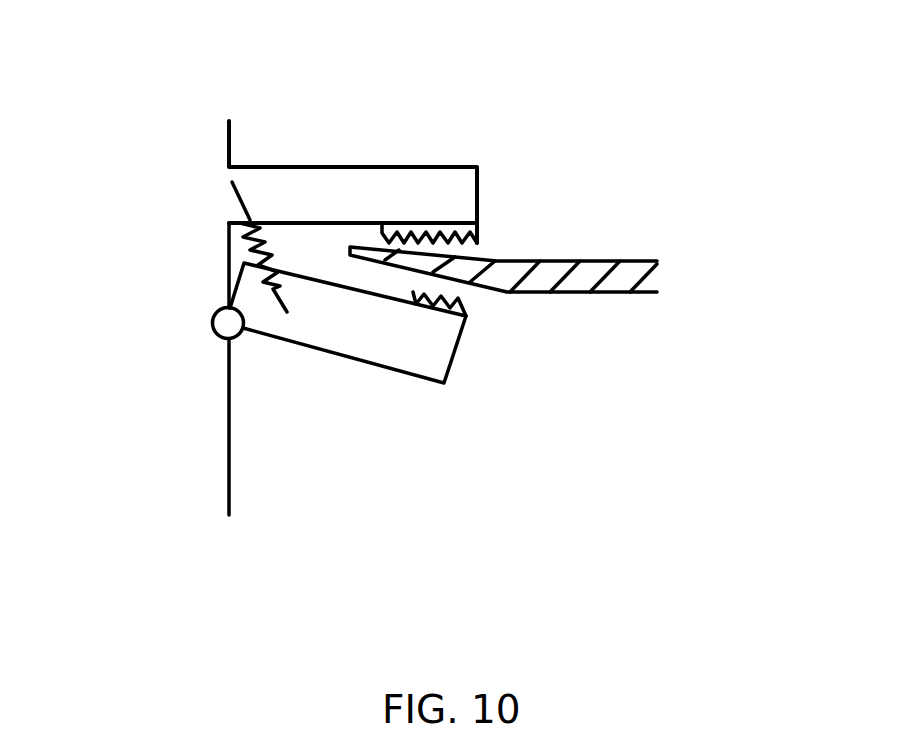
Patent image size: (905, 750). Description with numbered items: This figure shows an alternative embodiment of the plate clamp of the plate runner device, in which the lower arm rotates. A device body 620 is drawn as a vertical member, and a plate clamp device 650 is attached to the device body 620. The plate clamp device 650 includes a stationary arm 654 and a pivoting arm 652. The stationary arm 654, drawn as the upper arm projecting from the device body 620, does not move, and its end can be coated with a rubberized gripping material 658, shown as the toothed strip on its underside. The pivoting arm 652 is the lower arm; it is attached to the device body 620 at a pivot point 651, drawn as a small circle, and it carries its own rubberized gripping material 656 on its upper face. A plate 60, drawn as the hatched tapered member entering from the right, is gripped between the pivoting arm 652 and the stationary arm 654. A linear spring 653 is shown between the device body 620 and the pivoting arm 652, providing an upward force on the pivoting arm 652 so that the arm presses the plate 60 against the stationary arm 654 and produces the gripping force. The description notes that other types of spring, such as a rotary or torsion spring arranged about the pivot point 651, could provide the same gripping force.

The plate 60 is at (570, 250).
The device body 620 is at (229, 490).
The plate clamp device 650 is at (680, 568).
The pivot point 651 is at (216, 336).
The pivoting arm 652 is at (403, 360).
The linear spring 653 is at (245, 240).
The stationary arm 654 is at (372, 175).
The rubberized gripping material 656 is at (468, 320).
The rubberized gripping material 658 is at (478, 238).